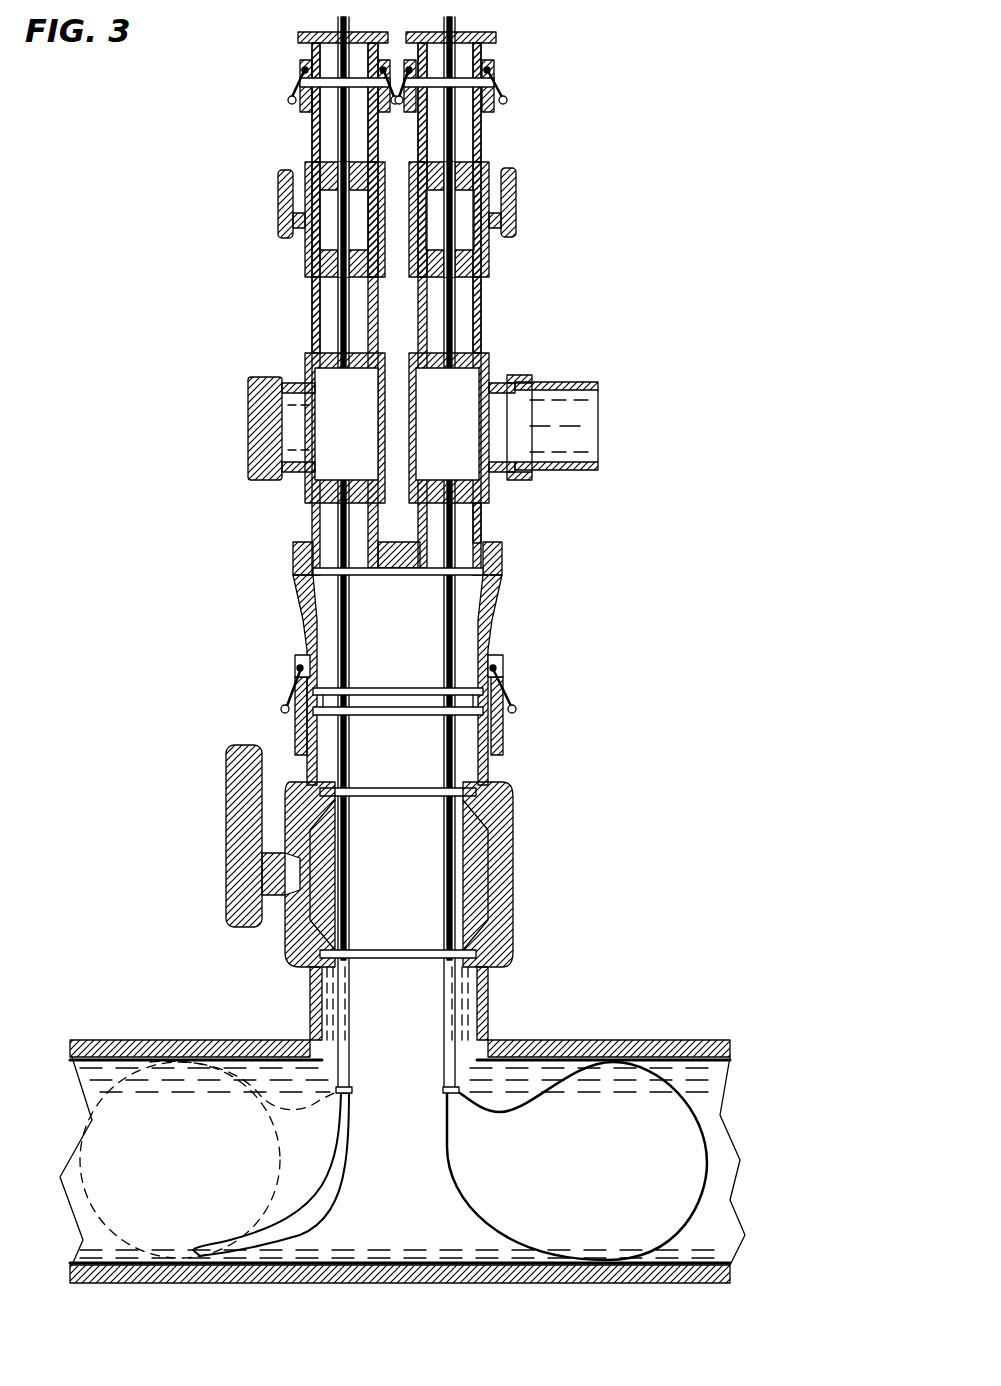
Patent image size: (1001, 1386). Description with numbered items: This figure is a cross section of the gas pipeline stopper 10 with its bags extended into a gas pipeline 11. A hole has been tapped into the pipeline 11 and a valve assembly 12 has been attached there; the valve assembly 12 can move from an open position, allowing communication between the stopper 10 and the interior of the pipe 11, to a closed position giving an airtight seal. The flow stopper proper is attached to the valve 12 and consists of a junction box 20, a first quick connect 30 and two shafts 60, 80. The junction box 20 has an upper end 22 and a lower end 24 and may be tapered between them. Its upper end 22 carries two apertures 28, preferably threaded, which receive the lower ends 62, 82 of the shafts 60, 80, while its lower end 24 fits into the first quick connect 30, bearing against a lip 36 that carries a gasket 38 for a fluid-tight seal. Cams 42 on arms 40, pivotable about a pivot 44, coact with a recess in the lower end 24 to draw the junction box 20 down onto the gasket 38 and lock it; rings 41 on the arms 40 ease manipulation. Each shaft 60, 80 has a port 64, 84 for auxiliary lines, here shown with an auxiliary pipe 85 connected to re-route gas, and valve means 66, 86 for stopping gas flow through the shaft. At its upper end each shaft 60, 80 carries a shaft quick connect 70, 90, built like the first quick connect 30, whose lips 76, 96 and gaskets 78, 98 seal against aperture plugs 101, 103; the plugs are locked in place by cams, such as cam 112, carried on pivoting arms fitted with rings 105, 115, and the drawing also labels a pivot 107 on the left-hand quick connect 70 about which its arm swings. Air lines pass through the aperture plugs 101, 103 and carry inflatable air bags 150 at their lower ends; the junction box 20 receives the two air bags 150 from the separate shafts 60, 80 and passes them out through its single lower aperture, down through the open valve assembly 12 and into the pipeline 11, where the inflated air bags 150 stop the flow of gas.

The gas pipeline stopper 10 is at (233, 172).
The pipeline 11 is at (638, 1040).
The valve assembly 12 is at (516, 893).
The junction box 20 is at (442, 680).
The upper end 22 is at (501, 545).
The lower end 24 is at (478, 631).
The apertures 28 is at (330, 578).
The first quick connect 30 is at (408, 689).
The lip 36 is at (438, 712).
The gasket 38 is at (381, 699).
The arms 40 is at (293, 680).
The rings 41 is at (282, 709).
The cams 42 is at (305, 657).
The pivot 44 is at (300, 669).
The shaft 60 is at (298, 241).
The lower end 62 is at (287, 452).
The port 64 is at (246, 420).
The valve means 66 is at (273, 214).
The shaft quick connect 70 is at (302, 92).
The lip 76 is at (316, 112).
The gasket 78 is at (312, 68).
The shaft 80 is at (491, 290).
The lower end 82 is at (484, 525).
The port 84 is at (522, 367).
The auxiliary pipe 85 is at (566, 381).
The valve means 86 is at (519, 198).
The shaft quick connect 90 is at (494, 101).
The lip 96 is at (482, 120).
The gasket 98 is at (481, 68).
The aperture plug 101 is at (300, 37).
The aperture plug 103 is at (493, 37).
The ring 105 is at (289, 103).
The pivot pin 107 is at (300, 72).
The cam 112 is at (492, 74).
The ring 115 is at (505, 105).
The inflatable air bags 150 is at (708, 1130).